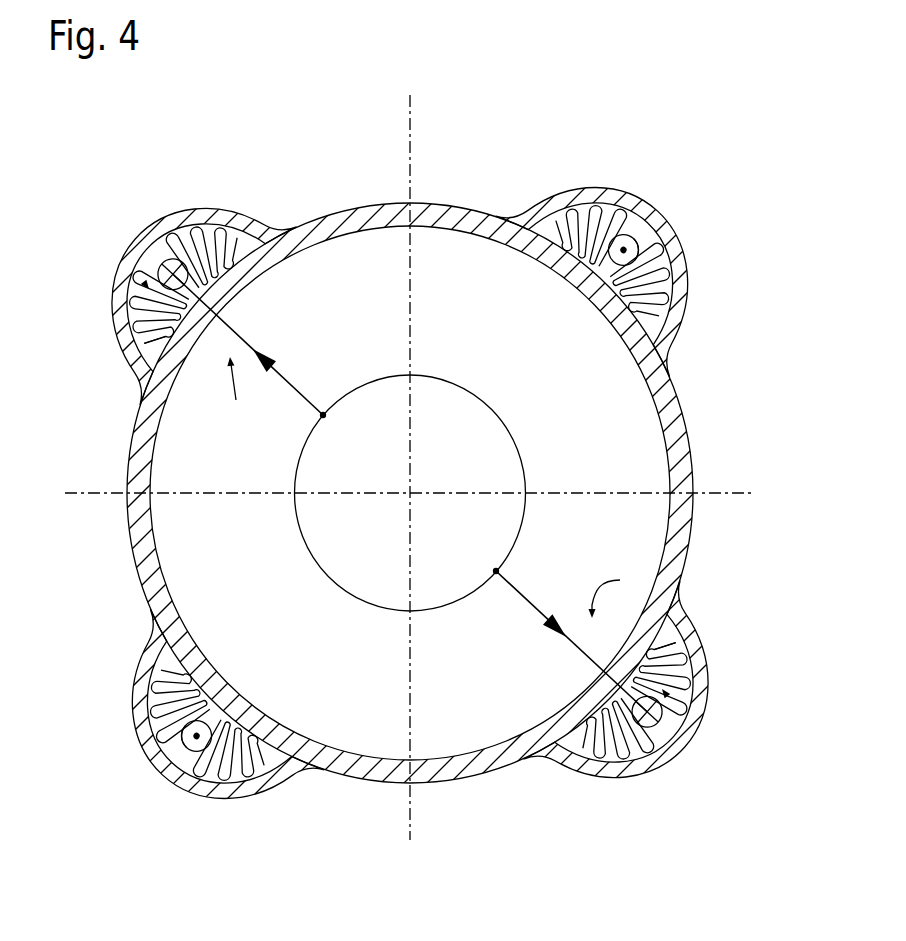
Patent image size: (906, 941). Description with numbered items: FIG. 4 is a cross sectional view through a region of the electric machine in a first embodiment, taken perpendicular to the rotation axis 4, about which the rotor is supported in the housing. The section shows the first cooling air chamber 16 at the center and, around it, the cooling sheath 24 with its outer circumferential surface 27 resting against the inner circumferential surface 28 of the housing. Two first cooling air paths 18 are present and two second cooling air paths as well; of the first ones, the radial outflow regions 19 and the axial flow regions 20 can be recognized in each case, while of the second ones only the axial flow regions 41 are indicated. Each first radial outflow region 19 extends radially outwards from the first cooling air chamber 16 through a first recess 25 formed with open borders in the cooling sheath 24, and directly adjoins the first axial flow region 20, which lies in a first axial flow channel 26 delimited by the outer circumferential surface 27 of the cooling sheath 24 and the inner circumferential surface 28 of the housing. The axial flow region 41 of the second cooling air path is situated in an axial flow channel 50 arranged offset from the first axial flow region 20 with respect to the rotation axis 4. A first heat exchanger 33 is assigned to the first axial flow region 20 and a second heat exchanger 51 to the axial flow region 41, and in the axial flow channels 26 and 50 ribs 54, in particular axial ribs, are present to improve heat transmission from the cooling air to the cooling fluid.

The rotation axis 4 is at (410, 493).
The first cooling air chamber 16 is at (462, 432).
The first cooling air path 18 is at (236, 400).
The first radial outflow region 19 is at (300, 387).
The first axial flow region 20 is at (163, 258).
The cooling sheath 24 is at (510, 262).
The first recess 25 is at (136, 404).
The first axial flow channel 26 is at (232, 233).
The outer circumferential surface 27 is at (300, 228).
The inner circumferential surface 28 is at (204, 235).
The first heat exchanger 33 is at (146, 284).
The axial flow region 41 is at (621, 251).
The axial flow channel 50 is at (637, 255).
The second heat exchanger 51 is at (607, 212).
The ribs 54 is at (145, 335).